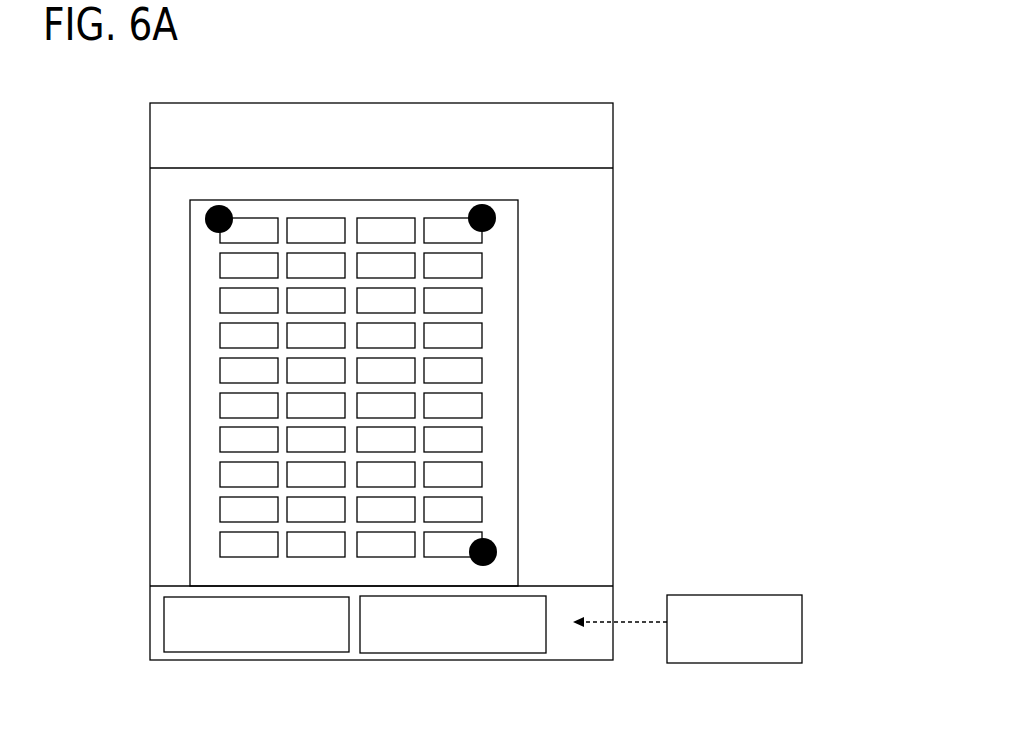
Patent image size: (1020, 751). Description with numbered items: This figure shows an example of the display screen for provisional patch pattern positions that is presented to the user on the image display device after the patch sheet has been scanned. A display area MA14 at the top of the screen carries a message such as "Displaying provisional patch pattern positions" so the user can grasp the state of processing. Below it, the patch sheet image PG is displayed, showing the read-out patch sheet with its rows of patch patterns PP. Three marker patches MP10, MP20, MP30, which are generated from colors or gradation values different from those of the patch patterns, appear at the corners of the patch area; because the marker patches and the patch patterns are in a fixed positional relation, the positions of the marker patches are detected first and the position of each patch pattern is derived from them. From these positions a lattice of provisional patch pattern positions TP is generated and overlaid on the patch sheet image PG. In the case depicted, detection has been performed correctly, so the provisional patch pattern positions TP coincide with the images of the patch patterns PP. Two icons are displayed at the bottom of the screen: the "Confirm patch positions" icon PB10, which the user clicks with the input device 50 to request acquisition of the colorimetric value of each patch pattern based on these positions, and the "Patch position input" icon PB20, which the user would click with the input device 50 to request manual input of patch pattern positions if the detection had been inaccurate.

The display area MA14 is at (617, 150).
The patch sheet image PG is at (522, 555).
The provisional patch pattern positions TP is at (217, 413).
The patch patterns PP is at (217, 412).
The marker patch MP10 is at (206, 220).
The marker patch MP20 is at (497, 216).
The marker patch MP30 is at (490, 541).
The Patch position input icon PB20 is at (298, 640).
The Confirm patch positions icon PB10 is at (483, 640).
The input device 50 is at (687, 629).